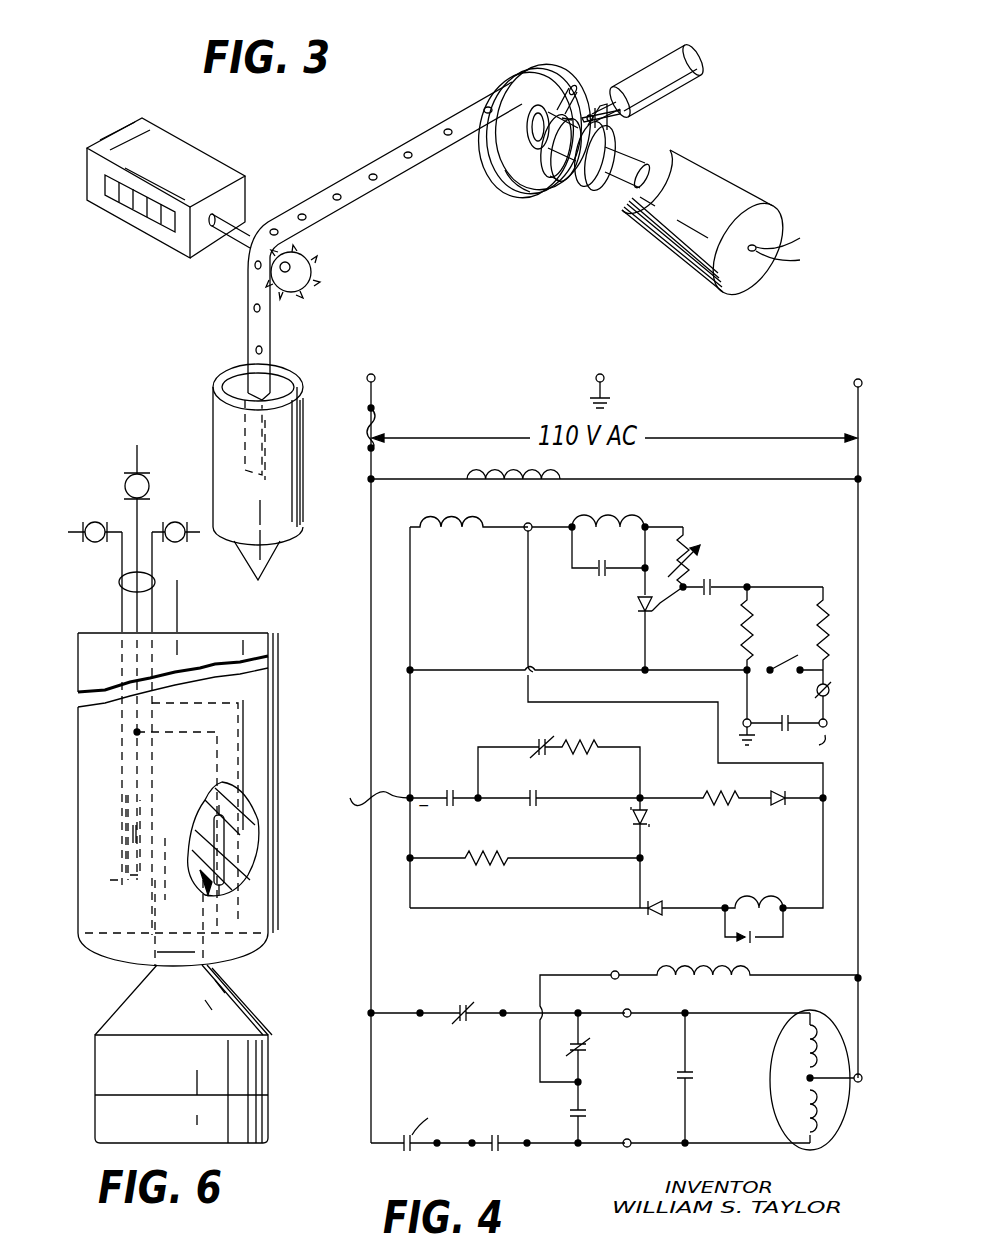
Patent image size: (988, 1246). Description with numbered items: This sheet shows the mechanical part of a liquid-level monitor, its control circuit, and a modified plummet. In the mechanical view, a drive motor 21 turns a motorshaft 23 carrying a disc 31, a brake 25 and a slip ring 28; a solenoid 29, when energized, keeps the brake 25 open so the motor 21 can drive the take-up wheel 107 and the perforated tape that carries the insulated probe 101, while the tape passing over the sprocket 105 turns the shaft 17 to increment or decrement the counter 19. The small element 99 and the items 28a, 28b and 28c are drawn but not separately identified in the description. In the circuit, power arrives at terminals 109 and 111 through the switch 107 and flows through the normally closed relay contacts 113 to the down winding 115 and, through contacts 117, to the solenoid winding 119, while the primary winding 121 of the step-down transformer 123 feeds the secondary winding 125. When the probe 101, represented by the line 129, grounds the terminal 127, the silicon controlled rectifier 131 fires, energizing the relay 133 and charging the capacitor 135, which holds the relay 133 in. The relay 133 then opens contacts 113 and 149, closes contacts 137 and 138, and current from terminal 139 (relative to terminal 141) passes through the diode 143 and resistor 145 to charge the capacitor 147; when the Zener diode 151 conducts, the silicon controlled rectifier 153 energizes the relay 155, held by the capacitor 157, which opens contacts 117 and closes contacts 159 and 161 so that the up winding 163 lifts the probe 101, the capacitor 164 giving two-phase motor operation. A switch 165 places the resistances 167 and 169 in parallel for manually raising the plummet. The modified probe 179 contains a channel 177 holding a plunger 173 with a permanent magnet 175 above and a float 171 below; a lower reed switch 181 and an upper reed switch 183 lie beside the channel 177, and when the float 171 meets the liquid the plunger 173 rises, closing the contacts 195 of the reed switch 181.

In FIG. 3, the shaft 17 is at (254, 212).
In FIG. 3, the counter 19 is at (218, 155).
In FIG. 3, the drive motor 21 is at (714, 196).
In FIG. 4, the drive motor 21 is at (798, 1080).
In FIG. 3, the motorshaft 23 is at (625, 163).
In FIG. 3, the brake 25 is at (570, 178).
In FIG. 3, the slip ring 28 is at (534, 112).
In FIG. 4, the slip ring 28 is at (828, 684).
In FIG. 6, the valve 28a is at (180, 522).
In FIG. 6, the valve 28b is at (130, 473).
In FIG. 6, the valve 28c is at (90, 522).
In FIG. 3, the solenoid 29 is at (662, 48).
In FIG. 3, the disc 31 is at (605, 190).
In FIG. 3, the crank pin 99 is at (572, 86).
In FIG. 3, the probe 101 is at (293, 472).
In FIG. 3, the sprocket 105 is at (313, 270).
In FIG. 3, the take-up wheel 107 is at (517, 193).
In FIG. 4, the take-up wheel 107 is at (376, 460).
In FIG. 4, the terminal 109 is at (376, 374).
In FIG. 4, the terminal 111 is at (858, 378).
In FIG. 4, the normally closed relay contacts 113 is at (460, 1002).
In FIG. 4, the down winding 115 is at (800, 1060).
In FIG. 4, the normally closed relay contacts 117 is at (586, 1050).
In FIG. 4, the solenoid winding 119 is at (710, 970).
In FIG. 4, the primary winding 121 is at (545, 480).
In FIG. 4, the transformer 123 is at (462, 514).
In FIG. 4, the secondary winding 125 is at (468, 530).
In FIG. 4, the terminal 127 is at (819, 720).
In FIG. 4, the line 129 is at (805, 735).
In FIG. 4, the silicon controlled rectifier 131 is at (652, 612).
In FIG. 4, the relay 133 is at (610, 515).
In FIG. 4, the capacitor 135 is at (598, 578).
In FIG. 4, the relay contacts 137 is at (460, 772).
In FIG. 4, the normally open relay contacts 138 is at (417, 1121).
In FIG. 4, the terminal 139 is at (820, 795).
In FIG. 4, the terminal 141 is at (364, 797).
In FIG. 4, the diode 143 is at (790, 806).
In FIG. 4, the resistor 145 is at (712, 808).
In FIG. 4, the capacitor 147 is at (538, 806).
In FIG. 4, the relay contacts 149 is at (556, 722).
In FIG. 4, the Zener diode 151 is at (660, 818).
In FIG. 4, the silicon controlled rectifier 153 is at (668, 887).
In FIG. 4, the relay 155 is at (748, 884).
In FIG. 4, the capacitor 157 is at (760, 940).
In FIG. 4, the normally open relay contacts 159 is at (585, 1104).
In FIG. 4, the normally open relay contacts 161 is at (490, 1150).
In FIG. 4, the up winding 163 is at (800, 1112).
In FIG. 4, the capacitor 164 is at (690, 1065).
In FIG. 4, the switch 165 is at (778, 660).
In FIG. 4, the resistance 167 is at (752, 625).
In FIG. 4, the resistance 169 is at (838, 572).
In FIG. 6, the float 171 is at (250, 1128).
In FIG. 6, the plunger 173 is at (273, 1058).
In FIG. 6, the permanent magnet 175 is at (179, 922).
In FIG. 6, the channel 177 is at (152, 923).
In FIG. 6, the probe 179 is at (272, 760).
In FIG. 6, the lower reed switch 181 is at (228, 872).
In FIG. 6, the upper reed switch 183 is at (120, 840).
In FIG. 6, the contacts 195 is at (224, 848).